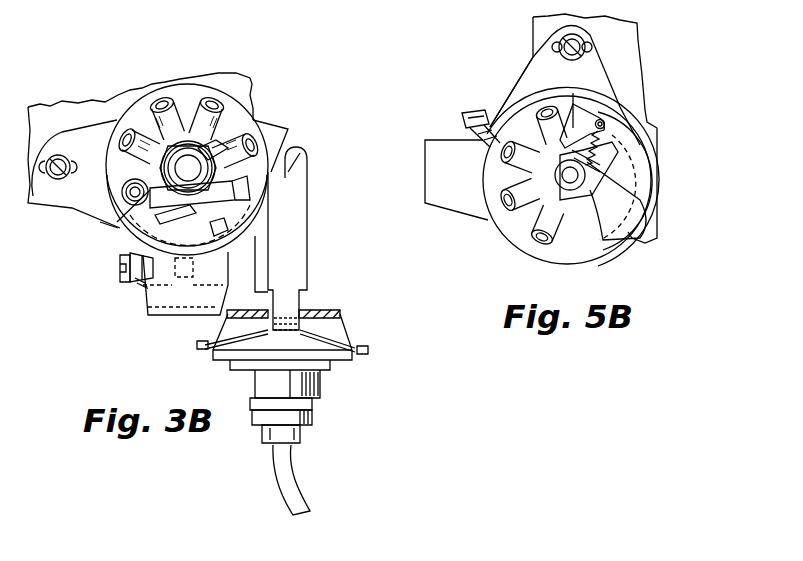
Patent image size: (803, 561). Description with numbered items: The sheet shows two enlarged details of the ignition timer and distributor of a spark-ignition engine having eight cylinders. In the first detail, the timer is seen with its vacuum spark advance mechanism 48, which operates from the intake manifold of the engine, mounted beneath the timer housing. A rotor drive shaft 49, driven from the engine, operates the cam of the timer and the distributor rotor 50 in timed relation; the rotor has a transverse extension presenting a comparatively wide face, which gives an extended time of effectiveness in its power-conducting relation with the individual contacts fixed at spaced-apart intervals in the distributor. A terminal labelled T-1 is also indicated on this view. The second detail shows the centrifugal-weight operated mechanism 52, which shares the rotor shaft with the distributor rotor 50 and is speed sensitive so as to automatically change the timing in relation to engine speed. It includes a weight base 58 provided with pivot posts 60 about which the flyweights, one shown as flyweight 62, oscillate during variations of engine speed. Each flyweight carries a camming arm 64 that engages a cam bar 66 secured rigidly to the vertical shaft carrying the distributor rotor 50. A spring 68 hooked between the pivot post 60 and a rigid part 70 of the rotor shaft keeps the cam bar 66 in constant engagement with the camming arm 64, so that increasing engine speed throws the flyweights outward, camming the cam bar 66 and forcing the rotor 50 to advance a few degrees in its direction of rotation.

In FIG. 3B, the vacuum spark advance mechanism 48 is at (227, 325).
In FIG. 3B, the rotor drive shaft 49 is at (210, 143).
In FIG. 3B, the terminal T-1 is at (110, 227).
In FIG. 5B, the distributor rotor 50 is at (520, 120).
In FIG. 5B, the centrifugal-weight operated mechanism 52 is at (524, 82).
In FIG. 5B, the weight base 58 is at (627, 212).
In FIG. 5B, the pivot post 60 is at (604, 124).
In FIG. 5B, the flyweight 62 is at (615, 198).
In FIG. 5B, the camming arm 64 is at (600, 111).
In FIG. 5B, the cam bar 66 is at (606, 145).
In FIG. 5B, the spring 68 is at (597, 135).
In FIG. 5B, the rigid part 70 is at (595, 172).